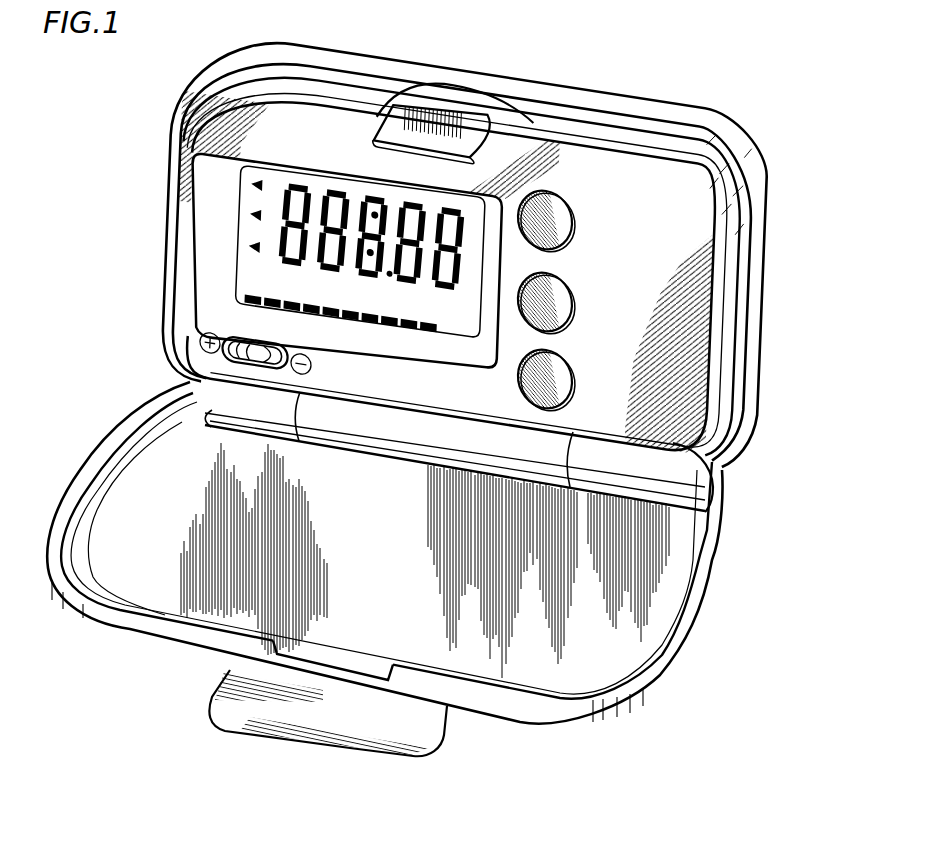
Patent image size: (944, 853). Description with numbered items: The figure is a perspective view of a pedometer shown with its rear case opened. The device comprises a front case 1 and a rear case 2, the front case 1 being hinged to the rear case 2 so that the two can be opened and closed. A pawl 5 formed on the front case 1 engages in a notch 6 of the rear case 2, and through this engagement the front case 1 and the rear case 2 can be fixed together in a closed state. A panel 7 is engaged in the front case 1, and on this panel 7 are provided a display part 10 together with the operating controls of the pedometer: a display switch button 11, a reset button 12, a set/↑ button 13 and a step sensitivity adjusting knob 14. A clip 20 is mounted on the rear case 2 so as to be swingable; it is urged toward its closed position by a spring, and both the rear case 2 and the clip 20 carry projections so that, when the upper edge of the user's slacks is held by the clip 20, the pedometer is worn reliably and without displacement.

The front case 1 is at (590, 90).
The rear case 2 is at (490, 700).
The pawl 5 is at (390, 108).
The notch 6 is at (303, 660).
The panel 7 is at (315, 125).
The display part 10 is at (248, 148).
The display switch button 11 is at (574, 206).
The reset button 12 is at (574, 294).
The set/↑ button 13 is at (575, 373).
The step sensitivity adjusting knob 14 is at (240, 333).
The clip 20 is at (380, 745).